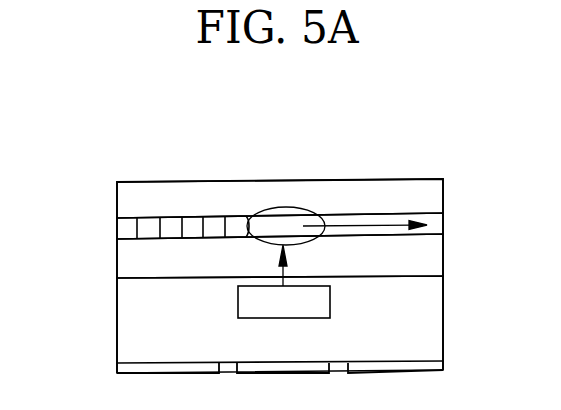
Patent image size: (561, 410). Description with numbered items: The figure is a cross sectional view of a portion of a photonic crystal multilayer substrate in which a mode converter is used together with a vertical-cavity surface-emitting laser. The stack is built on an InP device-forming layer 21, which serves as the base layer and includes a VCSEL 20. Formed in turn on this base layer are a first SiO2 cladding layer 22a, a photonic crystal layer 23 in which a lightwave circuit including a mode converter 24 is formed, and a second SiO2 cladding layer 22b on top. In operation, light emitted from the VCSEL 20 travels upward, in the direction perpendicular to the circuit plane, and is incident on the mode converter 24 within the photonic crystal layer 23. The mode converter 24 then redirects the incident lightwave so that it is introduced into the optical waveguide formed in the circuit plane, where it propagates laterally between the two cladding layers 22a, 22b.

The VCSEL 20 is at (323, 300).
The InP device-forming layer 21 is at (130, 327).
The SiO2 cladding layer 22a is at (130, 258).
The SiO2 cladding layer 22b is at (130, 199).
The photonic crystal layer 23 is at (130, 228).
The mode converter 24 is at (278, 200).